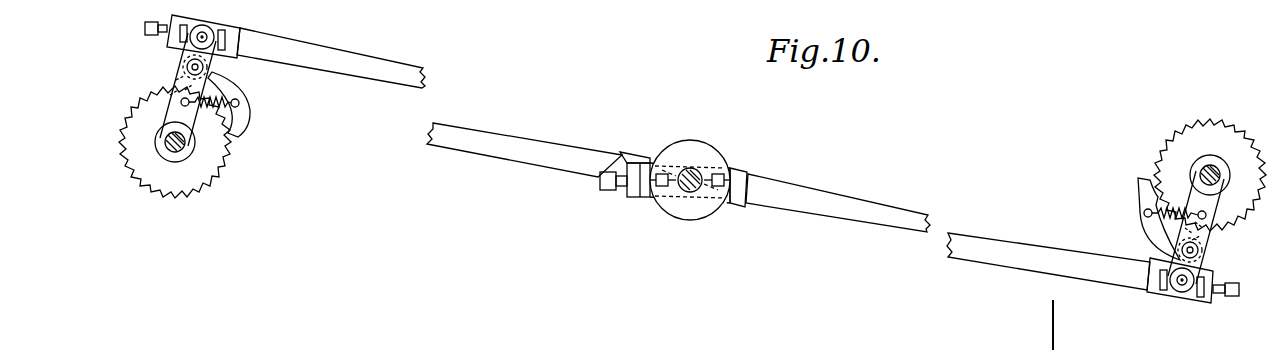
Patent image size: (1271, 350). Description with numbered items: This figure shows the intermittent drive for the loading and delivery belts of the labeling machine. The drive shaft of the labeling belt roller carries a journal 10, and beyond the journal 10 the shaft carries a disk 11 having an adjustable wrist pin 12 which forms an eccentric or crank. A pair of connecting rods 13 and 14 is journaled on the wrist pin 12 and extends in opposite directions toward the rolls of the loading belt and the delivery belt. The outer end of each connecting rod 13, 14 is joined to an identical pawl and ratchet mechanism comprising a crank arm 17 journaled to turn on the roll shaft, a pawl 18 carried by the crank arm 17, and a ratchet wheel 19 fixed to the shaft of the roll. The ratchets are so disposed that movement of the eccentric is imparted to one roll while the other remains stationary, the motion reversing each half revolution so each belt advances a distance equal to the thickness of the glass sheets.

The journal 10 is at (698, 197).
The disk 11 is at (715, 158).
The adjustable wrist pin 12 is at (668, 147).
The connecting rod 13 is at (460, 112).
The connecting rod 14 is at (962, 237).
The crank arm 17 is at (177, 78).
The pawl 18 is at (247, 113).
The ratchet wheel 19 is at (215, 152).